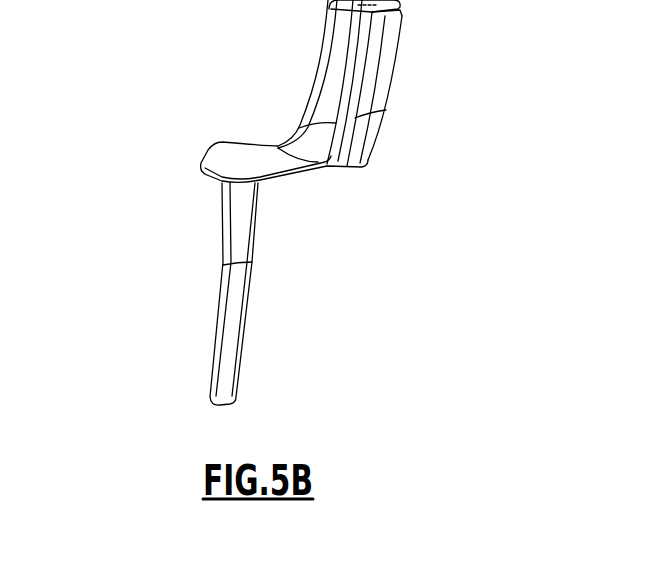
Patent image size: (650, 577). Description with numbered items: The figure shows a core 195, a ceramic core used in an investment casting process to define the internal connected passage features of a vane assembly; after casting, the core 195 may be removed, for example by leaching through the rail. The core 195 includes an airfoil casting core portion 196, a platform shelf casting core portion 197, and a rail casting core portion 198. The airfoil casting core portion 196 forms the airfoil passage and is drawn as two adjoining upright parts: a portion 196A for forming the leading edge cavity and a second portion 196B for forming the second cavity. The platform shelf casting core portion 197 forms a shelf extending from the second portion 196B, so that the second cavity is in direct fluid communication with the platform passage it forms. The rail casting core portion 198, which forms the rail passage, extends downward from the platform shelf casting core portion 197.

The core 195 is at (126, 162).
The airfoil casting core portion 196 is at (325, 66).
The portion for forming the leading edge cavity 196A is at (393, 90).
The second portion 196B is at (308, 107).
The platform shelf casting core portion 197 is at (280, 160).
The rail casting core portion 198 is at (245, 328).